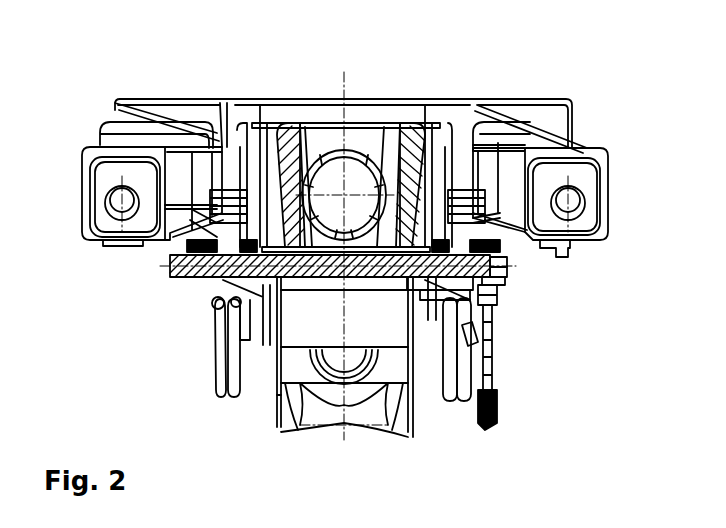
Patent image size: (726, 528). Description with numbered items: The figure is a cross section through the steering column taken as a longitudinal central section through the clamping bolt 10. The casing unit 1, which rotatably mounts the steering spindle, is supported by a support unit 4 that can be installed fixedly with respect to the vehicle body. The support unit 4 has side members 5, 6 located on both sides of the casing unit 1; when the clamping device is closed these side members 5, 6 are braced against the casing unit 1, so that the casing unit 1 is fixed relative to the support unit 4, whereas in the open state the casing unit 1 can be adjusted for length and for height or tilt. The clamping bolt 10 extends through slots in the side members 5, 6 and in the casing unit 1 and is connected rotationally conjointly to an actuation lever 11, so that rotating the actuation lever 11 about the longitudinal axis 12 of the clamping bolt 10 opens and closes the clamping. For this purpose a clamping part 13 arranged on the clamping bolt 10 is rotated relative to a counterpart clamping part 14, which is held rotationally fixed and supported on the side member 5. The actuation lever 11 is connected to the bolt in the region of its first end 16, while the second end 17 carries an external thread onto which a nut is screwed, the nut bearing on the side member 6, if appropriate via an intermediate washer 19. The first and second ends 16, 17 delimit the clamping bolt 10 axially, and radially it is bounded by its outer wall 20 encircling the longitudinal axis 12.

The casing unit 1 is at (270, 403).
The support unit 4 is at (498, 95).
The side member 5 is at (422, 352).
The side member 6 is at (227, 395).
The clamping bolt 10 is at (376, 248).
The actuation lever 11 is at (490, 373).
The longitudinal axis 12 is at (510, 267).
The clamping part 13 is at (492, 307).
The counterpart clamping part 14 is at (437, 350).
The first end 16 is at (507, 280).
The second end 17 is at (168, 270).
The intermediate washer 19 is at (223, 310).
The outer wall 20 is at (314, 248).